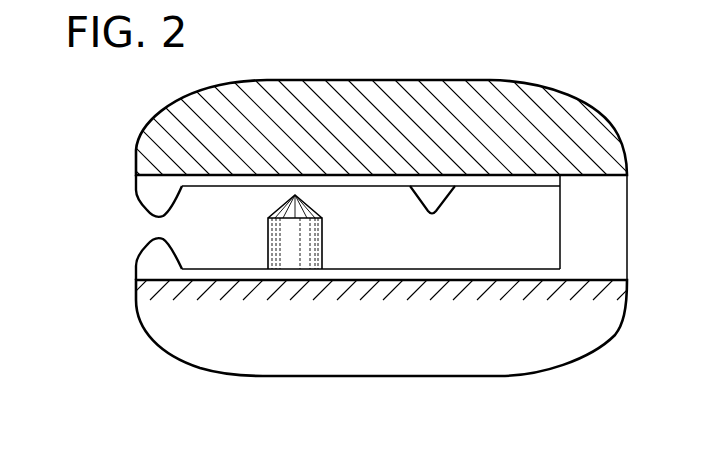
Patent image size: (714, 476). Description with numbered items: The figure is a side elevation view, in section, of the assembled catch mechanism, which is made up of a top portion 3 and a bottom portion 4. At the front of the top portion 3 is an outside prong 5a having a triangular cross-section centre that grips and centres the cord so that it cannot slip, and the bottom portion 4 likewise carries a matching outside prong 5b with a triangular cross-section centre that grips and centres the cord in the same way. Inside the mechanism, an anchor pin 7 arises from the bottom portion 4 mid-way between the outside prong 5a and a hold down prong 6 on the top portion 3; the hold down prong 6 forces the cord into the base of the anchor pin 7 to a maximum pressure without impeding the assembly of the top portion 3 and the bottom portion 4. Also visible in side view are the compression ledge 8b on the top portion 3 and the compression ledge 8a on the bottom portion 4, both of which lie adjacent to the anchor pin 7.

The top portion 3 is at (472, 101).
The bottom portion 4 is at (473, 347).
The outside prong 5a is at (138, 200).
The outside prong 5b is at (137, 250).
The hold down prong 6 is at (424, 208).
The anchor pin 7 is at (278, 237).
The compression ledge 8a is at (420, 272).
The compression ledge 8b is at (490, 186).